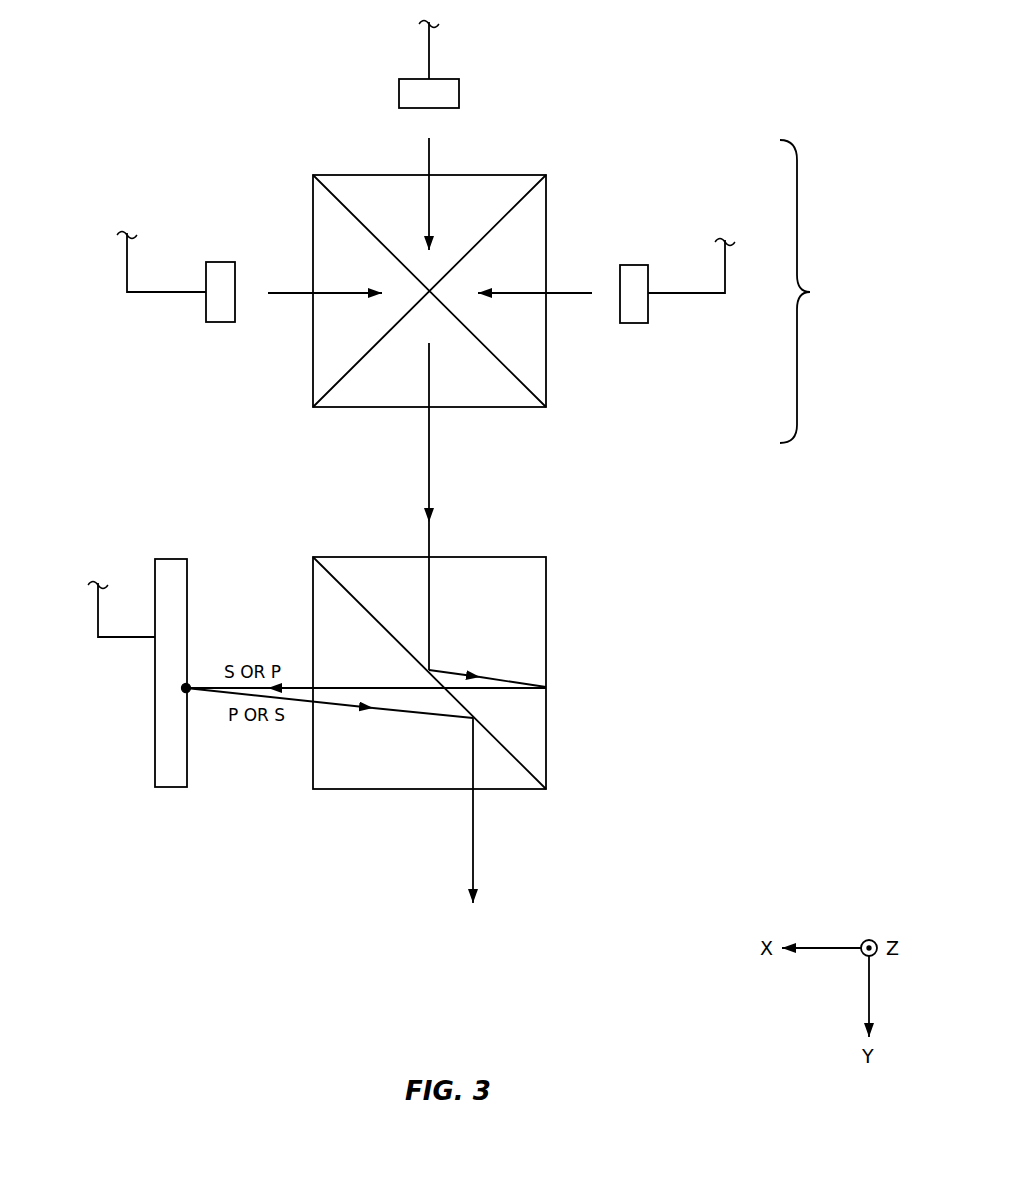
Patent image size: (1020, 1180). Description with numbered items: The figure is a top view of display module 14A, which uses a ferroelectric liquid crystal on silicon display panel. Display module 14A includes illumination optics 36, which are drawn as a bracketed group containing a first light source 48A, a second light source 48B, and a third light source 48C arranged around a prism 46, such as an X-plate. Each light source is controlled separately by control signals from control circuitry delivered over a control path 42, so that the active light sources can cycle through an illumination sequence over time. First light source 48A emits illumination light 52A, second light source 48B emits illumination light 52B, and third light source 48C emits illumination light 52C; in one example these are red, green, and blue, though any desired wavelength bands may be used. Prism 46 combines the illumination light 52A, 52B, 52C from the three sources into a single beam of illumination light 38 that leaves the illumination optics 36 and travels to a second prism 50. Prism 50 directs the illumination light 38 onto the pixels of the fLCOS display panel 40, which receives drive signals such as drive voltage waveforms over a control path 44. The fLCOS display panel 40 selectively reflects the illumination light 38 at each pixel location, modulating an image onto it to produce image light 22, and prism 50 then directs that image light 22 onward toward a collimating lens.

The first light source 48A is at (222, 244).
The second light source 48B is at (370, 99).
The third light source 48C is at (635, 247).
The control path 42 is at (430, 57).
The prism 46 is at (546, 175).
The illumination light 52A is at (333, 297).
The illumination light 52B is at (427, 200).
The illumination light 52C is at (519, 297).
The illumination optics 36 is at (812, 291).
The illumination light 38 is at (431, 467).
The prism 50 is at (540, 557).
The fLCOS display panel 40 is at (173, 558).
The control path 44 is at (96, 617).
The image light 22 is at (475, 853).
The display module 14A is at (593, 893).